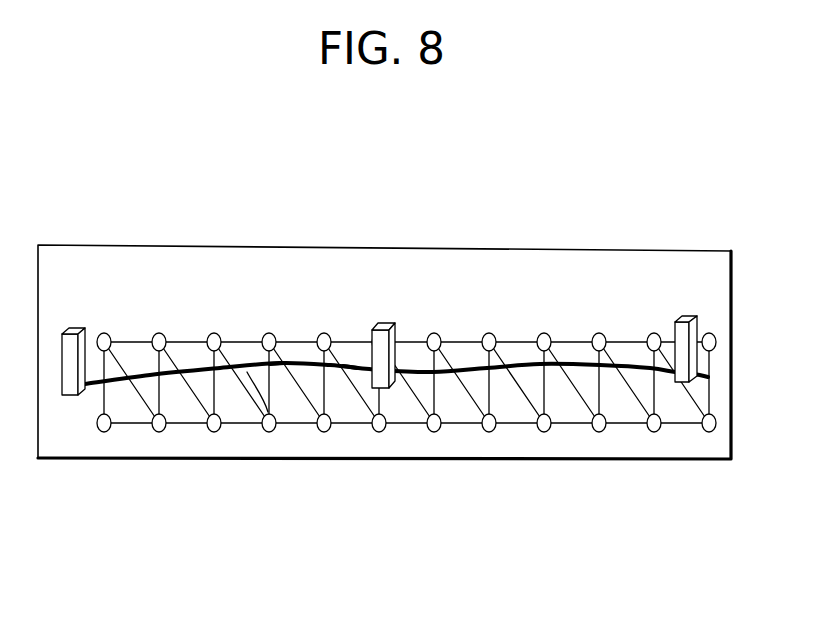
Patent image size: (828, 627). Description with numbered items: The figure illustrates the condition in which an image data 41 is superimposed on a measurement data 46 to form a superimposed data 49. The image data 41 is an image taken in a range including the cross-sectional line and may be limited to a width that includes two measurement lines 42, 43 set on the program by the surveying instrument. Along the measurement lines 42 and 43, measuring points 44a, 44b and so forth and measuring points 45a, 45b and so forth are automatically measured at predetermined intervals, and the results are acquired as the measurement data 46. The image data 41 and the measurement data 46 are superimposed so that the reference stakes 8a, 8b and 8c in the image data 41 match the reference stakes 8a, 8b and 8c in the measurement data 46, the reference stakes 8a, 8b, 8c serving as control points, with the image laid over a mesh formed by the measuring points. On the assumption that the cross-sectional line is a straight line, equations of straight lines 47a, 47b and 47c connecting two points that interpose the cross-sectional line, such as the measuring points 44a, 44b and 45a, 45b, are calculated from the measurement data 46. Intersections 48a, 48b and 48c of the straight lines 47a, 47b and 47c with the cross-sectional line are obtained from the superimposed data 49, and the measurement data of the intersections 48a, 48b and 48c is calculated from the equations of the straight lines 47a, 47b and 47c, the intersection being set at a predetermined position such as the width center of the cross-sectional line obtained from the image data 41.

The reference stake 8a is at (79, 332).
The reference stake 8b is at (386, 323).
The reference stake 8c is at (689, 320).
The image data 41 is at (647, 250).
The measurement line 42 is at (515, 340).
The measurement line 43 is at (565, 430).
The measuring point 44a is at (270, 333).
The measuring point 44b is at (326, 333).
The measuring point 45a is at (266, 432).
The measuring point 45b is at (325, 432).
The measurement data 46 is at (676, 438).
The straight line 47a is at (265, 367).
The straight line 47b is at (294, 370).
The straight line 47c is at (340, 374).
The intersection 48a is at (254, 362).
The intersection 48b is at (277, 368).
The intersection 48c is at (350, 385).
The superimposed data 49 is at (464, 246).